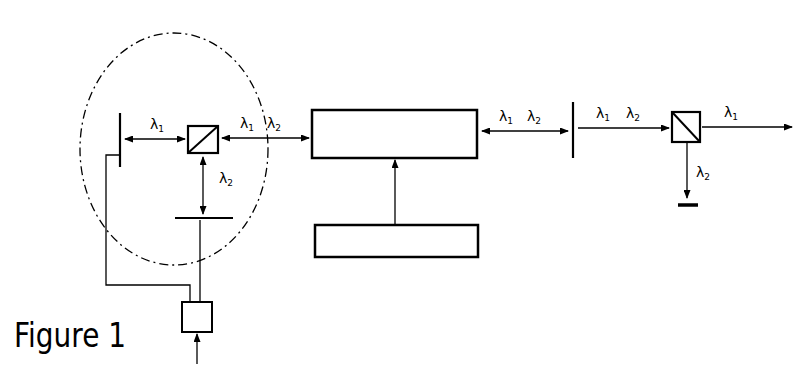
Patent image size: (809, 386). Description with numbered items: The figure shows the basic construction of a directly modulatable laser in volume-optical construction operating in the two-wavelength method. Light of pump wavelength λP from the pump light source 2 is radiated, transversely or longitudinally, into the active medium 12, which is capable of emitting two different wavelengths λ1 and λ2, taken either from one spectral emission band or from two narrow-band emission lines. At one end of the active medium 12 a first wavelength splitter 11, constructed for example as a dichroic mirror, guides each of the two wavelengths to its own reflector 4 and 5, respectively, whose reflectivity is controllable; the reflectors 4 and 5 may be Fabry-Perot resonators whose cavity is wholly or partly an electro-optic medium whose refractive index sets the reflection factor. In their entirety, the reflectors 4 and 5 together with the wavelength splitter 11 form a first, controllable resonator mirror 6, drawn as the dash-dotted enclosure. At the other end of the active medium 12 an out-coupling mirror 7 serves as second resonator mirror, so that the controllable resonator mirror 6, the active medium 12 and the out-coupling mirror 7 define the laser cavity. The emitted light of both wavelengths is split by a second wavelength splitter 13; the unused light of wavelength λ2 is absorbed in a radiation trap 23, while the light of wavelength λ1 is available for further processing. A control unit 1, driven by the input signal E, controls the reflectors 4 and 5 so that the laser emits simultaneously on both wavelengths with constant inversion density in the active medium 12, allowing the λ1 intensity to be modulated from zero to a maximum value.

The control unit 1 is at (212, 313).
The pump light source 2 is at (415, 245).
The reflector 4 is at (115, 172).
The reflector 5 is at (203, 223).
The controllable resonator mirror 6 is at (240, 63).
The out-coupling mirror 7 is at (575, 160).
The first wavelength splitter 11 is at (197, 126).
The active medium 12 is at (427, 120).
The second wavelength splitter 13 is at (685, 110).
The radiation trap 23 is at (693, 213).